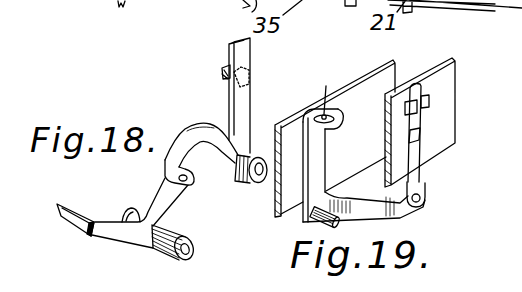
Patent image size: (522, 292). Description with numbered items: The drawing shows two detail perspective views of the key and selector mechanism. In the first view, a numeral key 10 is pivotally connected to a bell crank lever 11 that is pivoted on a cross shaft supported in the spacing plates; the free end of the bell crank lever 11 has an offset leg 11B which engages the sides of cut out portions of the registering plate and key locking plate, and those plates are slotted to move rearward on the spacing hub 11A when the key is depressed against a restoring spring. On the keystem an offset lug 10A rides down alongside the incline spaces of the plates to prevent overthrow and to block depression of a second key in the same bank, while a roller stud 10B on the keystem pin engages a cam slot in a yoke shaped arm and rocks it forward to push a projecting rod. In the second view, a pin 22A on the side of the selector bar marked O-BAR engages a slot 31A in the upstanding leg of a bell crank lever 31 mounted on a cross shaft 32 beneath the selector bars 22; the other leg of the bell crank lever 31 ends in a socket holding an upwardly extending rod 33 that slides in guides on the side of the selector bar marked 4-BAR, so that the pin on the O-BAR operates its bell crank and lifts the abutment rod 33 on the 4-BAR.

In FIG. 18, the numeral key 10 is at (236, 101).
In FIG. 18, the offset lug 10A is at (222, 72).
In FIG. 18, the roller stud 10B is at (251, 183).
In FIG. 18, the bell crank lever 11 is at (183, 218).
In FIG. 18, the spacing hub 11A is at (171, 252).
In FIG. 18, the offset leg 11B is at (72, 218).
In FIG. 19, the selector bar 22 is at (374, 156).
In FIG. 19, the pin 22A is at (338, 117).
In FIG. 19, the bell crank lever 31 is at (320, 141).
In FIG. 19, the slot 31A is at (326, 91).
In FIG. 19, the cross shaft 32 is at (339, 224).
In FIG. 19, the rod 33 is at (423, 180).
In FIG. 19, the 0 bar O-BAR is at (389, 61).
In FIG. 19, the 4 bar 4-BAR is at (455, 88).